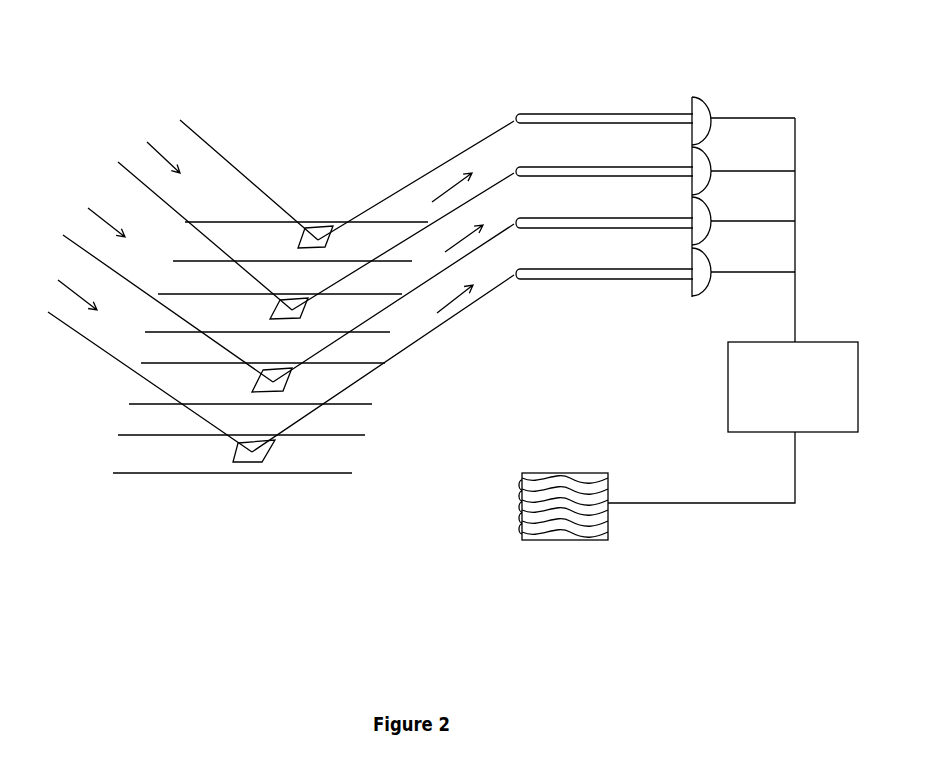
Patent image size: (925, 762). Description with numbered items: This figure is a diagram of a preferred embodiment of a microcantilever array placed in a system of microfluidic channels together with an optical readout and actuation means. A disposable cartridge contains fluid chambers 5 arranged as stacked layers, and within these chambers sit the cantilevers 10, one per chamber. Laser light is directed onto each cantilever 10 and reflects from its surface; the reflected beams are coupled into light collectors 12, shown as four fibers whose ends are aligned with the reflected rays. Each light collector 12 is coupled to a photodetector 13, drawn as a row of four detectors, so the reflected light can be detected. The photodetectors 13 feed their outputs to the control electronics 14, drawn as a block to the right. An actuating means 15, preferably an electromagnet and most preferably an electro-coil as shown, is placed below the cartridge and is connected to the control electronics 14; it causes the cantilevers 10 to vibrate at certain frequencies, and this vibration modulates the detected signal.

The fluid chambers 5 is at (148, 455).
The cantilever 10 is at (245, 456).
The light collector 12 is at (552, 108).
The photodetector 13 is at (700, 98).
The control electronics 14 is at (728, 375).
The actuating means 15 is at (560, 542).